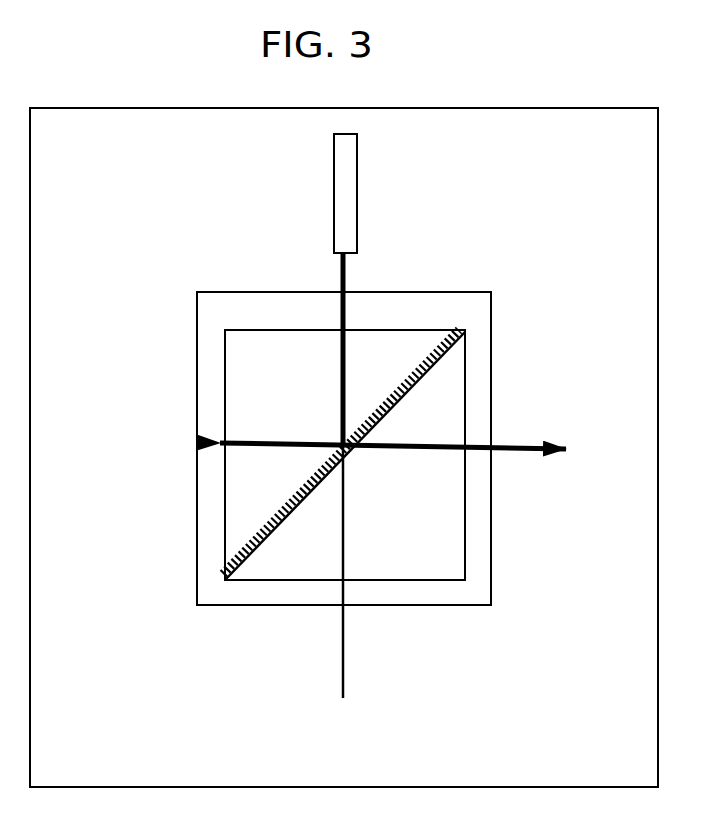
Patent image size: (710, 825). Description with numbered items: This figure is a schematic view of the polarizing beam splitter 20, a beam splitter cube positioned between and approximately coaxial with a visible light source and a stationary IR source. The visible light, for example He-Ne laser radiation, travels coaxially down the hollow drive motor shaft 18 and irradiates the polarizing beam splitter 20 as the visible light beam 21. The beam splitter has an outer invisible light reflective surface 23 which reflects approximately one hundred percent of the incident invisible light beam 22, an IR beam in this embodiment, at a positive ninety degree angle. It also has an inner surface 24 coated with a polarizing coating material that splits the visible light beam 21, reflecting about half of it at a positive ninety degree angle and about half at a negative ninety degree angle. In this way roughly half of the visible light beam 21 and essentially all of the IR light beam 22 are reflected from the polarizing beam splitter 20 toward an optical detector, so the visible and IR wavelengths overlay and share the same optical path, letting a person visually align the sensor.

The hollow drive motor shaft 18 is at (346, 190).
The polarizing beam splitter 20 is at (163, 222).
The visible light beam 21 is at (348, 283).
The invisible light beam 22 is at (525, 455).
The outer invisible light reflective surface 23 is at (394, 409).
The inner surface 24 is at (418, 360).